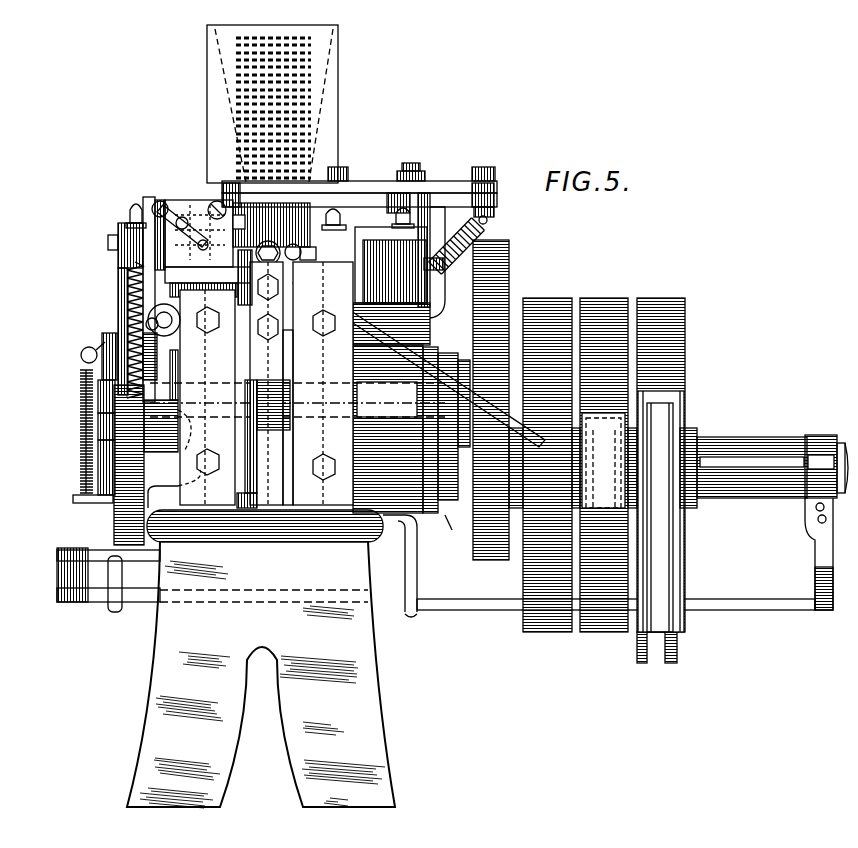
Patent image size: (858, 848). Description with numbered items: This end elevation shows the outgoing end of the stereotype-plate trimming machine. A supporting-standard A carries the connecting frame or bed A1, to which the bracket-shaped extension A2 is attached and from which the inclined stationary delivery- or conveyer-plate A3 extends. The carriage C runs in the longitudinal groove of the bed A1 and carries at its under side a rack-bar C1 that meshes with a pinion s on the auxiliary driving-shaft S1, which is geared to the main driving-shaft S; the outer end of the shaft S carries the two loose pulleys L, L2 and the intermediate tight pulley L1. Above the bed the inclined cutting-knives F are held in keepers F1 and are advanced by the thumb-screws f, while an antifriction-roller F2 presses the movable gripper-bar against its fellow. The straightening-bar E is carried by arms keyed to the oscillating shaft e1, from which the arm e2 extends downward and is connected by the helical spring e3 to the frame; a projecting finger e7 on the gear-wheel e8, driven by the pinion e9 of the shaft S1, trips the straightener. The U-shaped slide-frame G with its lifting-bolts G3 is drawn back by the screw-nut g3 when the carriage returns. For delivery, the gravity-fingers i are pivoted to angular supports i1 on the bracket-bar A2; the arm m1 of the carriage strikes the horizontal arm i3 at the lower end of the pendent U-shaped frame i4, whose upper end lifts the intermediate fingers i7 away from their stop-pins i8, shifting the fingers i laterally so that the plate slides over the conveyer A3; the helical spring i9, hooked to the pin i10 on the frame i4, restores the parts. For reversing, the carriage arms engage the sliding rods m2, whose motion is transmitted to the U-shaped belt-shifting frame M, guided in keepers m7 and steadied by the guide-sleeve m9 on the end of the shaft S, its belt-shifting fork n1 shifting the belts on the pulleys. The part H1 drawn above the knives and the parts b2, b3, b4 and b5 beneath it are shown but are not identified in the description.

The hopper H1 is at (338, 108).
The lower cross bar b2 is at (350, 203).
The upper cross bar b4 is at (436, 187).
The bolt end b3 is at (494, 212).
The gear wheel b5 is at (509, 250).
The thumb-screws f is at (128, 212).
The keepers F1 is at (118, 230).
The inclined cutting-knives F is at (108, 244).
The angular supports i1 is at (149, 203).
The stop-pins i8 is at (212, 248).
The intermediate fingers i7 is at (196, 222).
The gravity-fingers i is at (216, 201).
The straightening-bar E is at (271, 225).
The U-shaped slide-frame G is at (308, 252).
The screw-nut g3 is at (305, 290).
The antifriction-roller F2 is at (391, 254).
The lifting-bolts G3 is at (366, 232).
The inclined stationary delivery-plate A3 is at (430, 347).
The connecting frame or bed A1 is at (388, 429).
The auxiliary driving-shaft S1 is at (462, 372).
The bracket-shaped extension A2 is at (297, 383).
The carriage C is at (250, 288).
The rack-bar C1 is at (290, 330).
The pendent U-shaped frame i4 is at (148, 292).
The oscillating shaft e1 is at (174, 320).
The helical spring i9 is at (128, 277).
The arm e2 is at (88, 346).
The projecting finger e7 is at (98, 386).
The pinion e9 is at (98, 408).
The helical spring e3 is at (98, 434).
The gear-wheel e8 is at (106, 470).
The pin i10 is at (144, 440).
The horizontal arm i3 is at (178, 425).
The pinion s is at (272, 432).
The arm m1 is at (252, 470).
The horizontal sliding rods m2 is at (237, 540).
The supporting-standards A is at (370, 700).
The keepers m7 is at (122, 580).
The U-shaped belt-shifting frame M is at (80, 600).
The loose pulley L is at (551, 452).
The tight pulley L1 is at (608, 451).
The loose pulley L2 is at (661, 467).
The belt-shifting fork n1 is at (673, 396).
The driving-shaft S is at (778, 478).
The guide-sleeve m9 is at (806, 437).